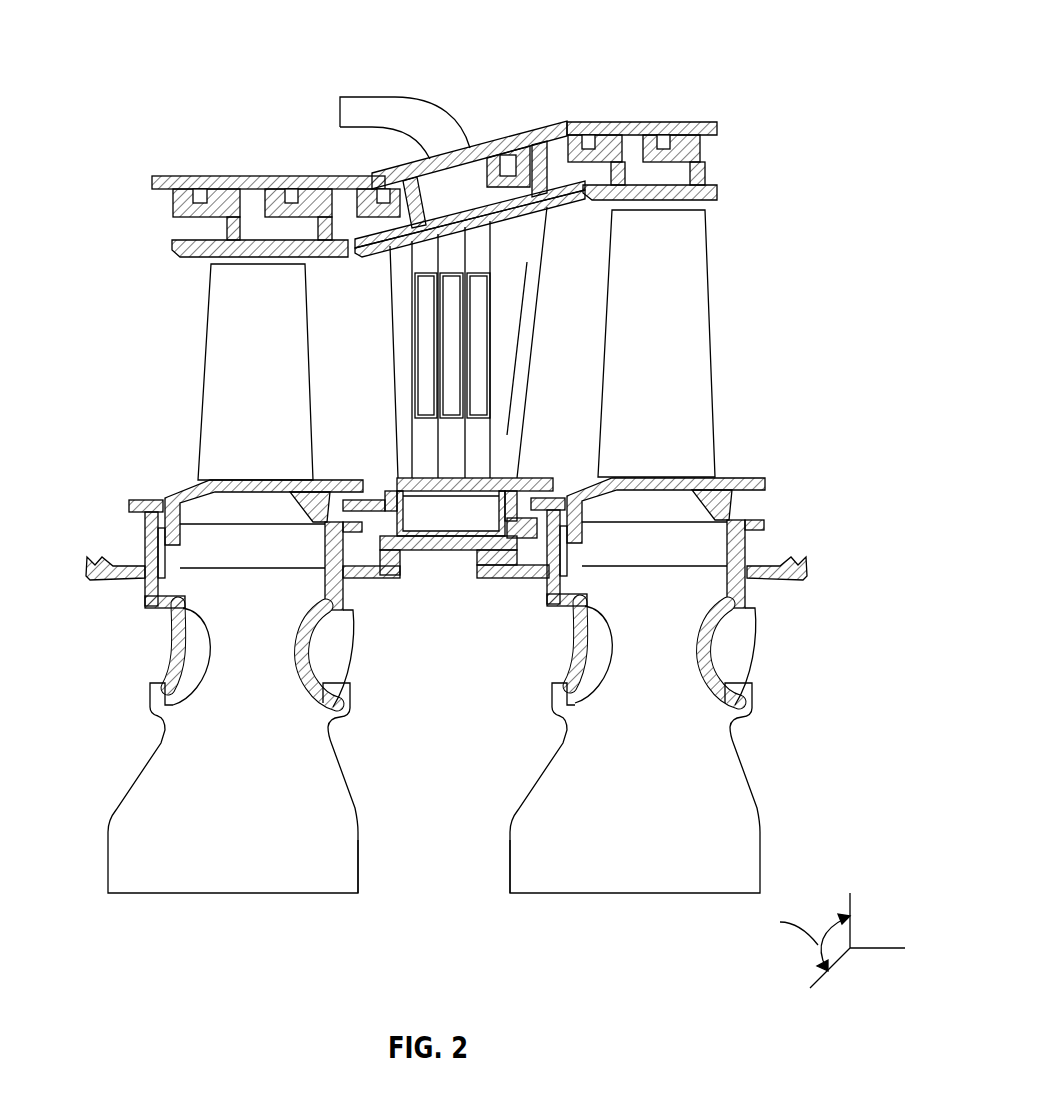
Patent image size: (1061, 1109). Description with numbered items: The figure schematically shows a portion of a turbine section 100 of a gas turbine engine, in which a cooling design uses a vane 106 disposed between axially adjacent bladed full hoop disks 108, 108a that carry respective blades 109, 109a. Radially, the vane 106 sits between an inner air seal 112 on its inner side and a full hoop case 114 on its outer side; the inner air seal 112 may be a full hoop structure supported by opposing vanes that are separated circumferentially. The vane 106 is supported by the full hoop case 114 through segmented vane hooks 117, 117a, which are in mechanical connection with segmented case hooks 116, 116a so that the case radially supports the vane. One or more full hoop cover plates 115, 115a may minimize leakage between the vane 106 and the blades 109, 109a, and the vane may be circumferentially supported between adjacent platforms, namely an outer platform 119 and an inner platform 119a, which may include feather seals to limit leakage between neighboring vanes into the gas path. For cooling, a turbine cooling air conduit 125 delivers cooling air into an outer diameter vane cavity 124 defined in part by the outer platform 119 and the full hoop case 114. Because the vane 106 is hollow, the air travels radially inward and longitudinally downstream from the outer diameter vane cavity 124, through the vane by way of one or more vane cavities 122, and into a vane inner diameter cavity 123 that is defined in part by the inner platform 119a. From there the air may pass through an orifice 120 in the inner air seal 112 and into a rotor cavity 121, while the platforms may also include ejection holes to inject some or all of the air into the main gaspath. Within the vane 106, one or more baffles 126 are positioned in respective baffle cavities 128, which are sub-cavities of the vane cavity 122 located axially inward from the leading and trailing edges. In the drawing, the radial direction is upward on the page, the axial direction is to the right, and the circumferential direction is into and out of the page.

The turbine section 100 is at (156, 34).
The vane 106 is at (522, 320).
The bladed full hoop disk 108 is at (745, 856).
The bladed full hoop disk 108a is at (123, 857).
The blade 109 is at (712, 300).
The blade 109a is at (207, 338).
The inner air seal 112 is at (525, 528).
The full hoop case 114 is at (720, 128).
The full hoop cover plate 115 is at (725, 638).
The full hoop cover plate 115a is at (330, 630).
The segmented case hook 116 is at (497, 180).
The segmented case hook 116a is at (364, 188).
The segmented vane hook 117 is at (542, 170).
The segmented vane hook 117a is at (403, 198).
The outer platform 119 is at (560, 196).
The inner platform 119a is at (385, 490).
The orifice 120 is at (433, 551).
The rotor cavity 121 is at (450, 702).
The vane cavity 122 is at (517, 368).
The vane inner diameter cavity 123 is at (450, 528).
The outer diameter vane cavity 124 is at (449, 186).
The turbine cooling air conduit 125 is at (370, 98).
The baffle 126 is at (422, 337).
The baffle cavity 128 is at (414, 378).